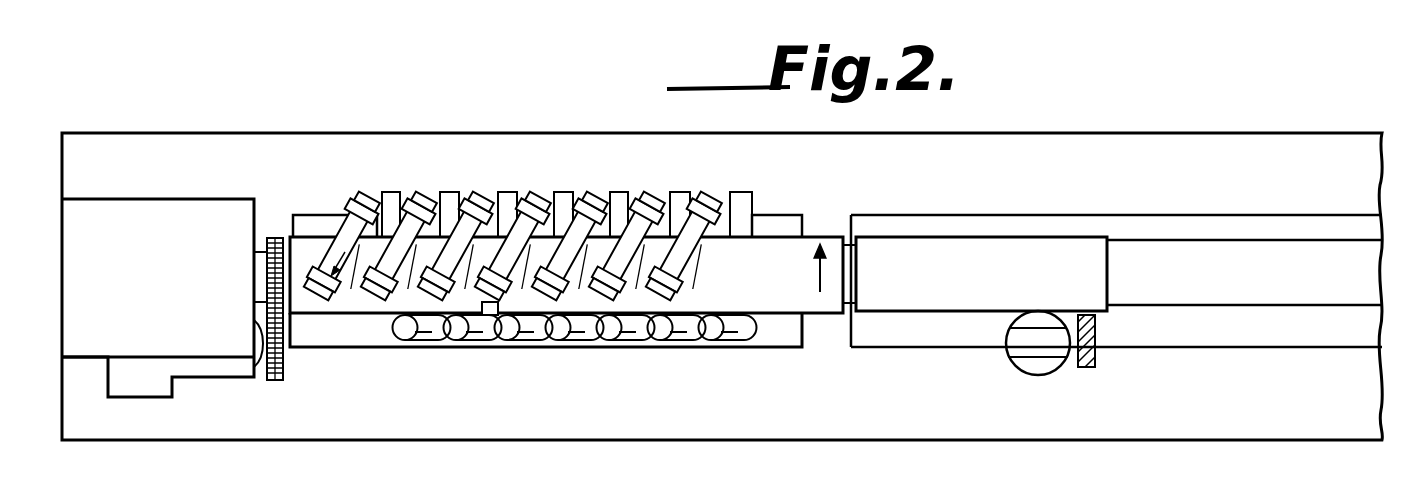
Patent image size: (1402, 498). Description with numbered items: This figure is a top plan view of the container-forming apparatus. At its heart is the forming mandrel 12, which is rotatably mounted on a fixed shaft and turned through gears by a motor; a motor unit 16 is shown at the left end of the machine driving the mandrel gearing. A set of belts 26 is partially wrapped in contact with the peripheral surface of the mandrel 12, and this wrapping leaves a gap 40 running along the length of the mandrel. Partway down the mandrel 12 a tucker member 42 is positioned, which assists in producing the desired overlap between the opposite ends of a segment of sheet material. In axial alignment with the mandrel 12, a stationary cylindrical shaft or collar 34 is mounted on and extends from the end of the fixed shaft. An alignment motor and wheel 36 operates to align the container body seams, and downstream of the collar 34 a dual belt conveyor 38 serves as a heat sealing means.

The forming mandrel 12 is at (797, 250).
The motor 16 is at (187, 207).
The belts 26 is at (592, 195).
The stationary cylindrical shaft or collar 34 is at (985, 250).
The alignment motor and wheel 36 is at (1095, 363).
The dual belt conveyor 38 is at (1257, 236).
The gap 40 is at (385, 301).
The tucker member 42 is at (493, 315).